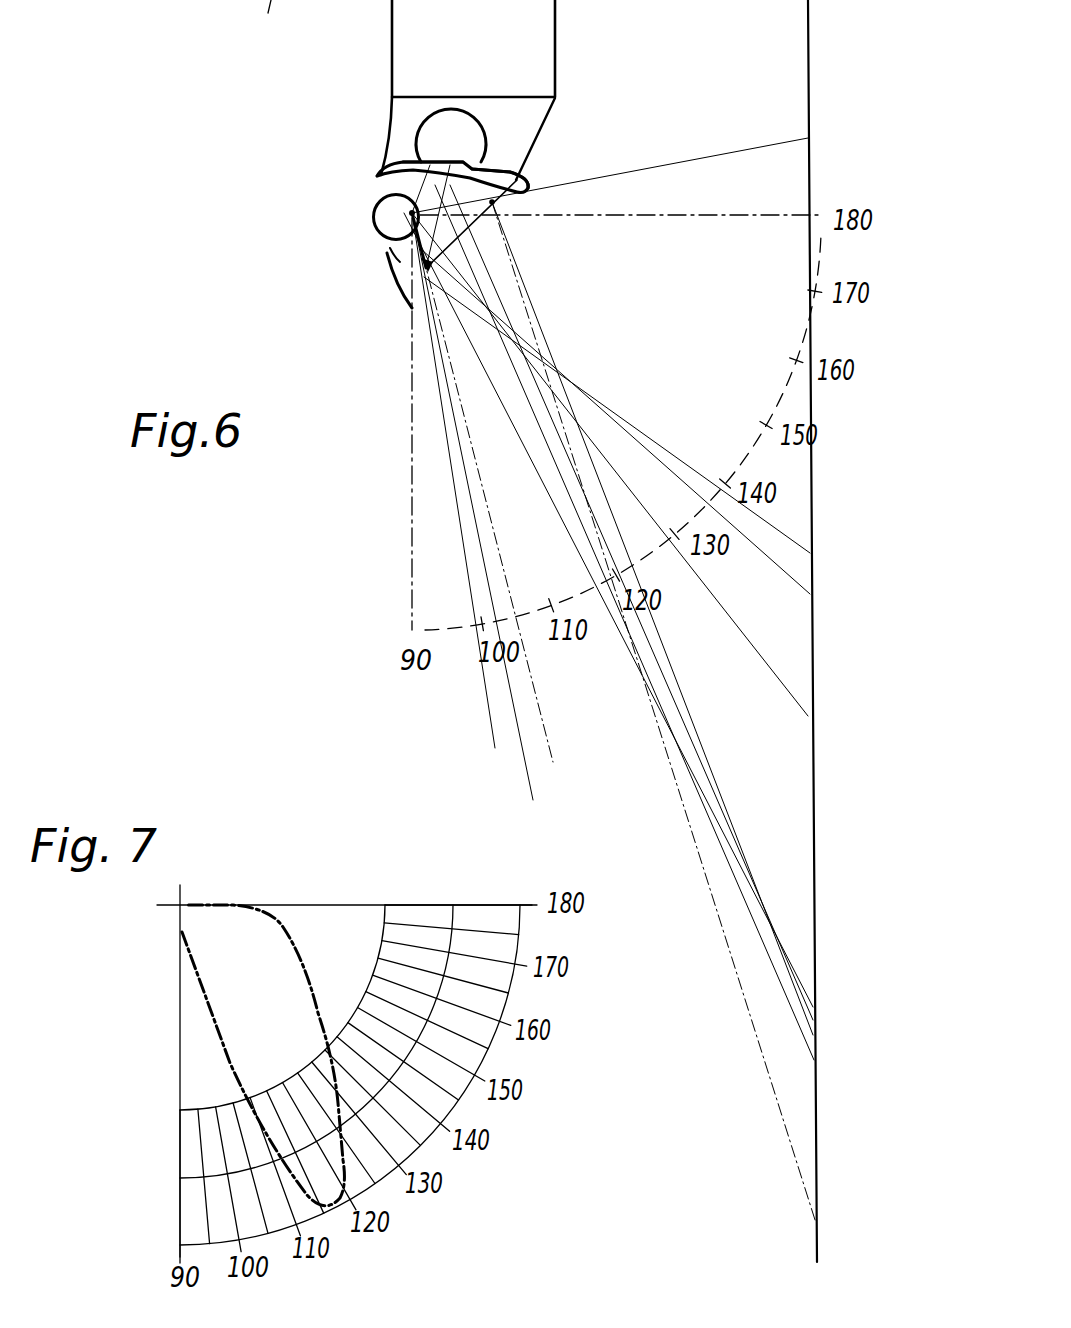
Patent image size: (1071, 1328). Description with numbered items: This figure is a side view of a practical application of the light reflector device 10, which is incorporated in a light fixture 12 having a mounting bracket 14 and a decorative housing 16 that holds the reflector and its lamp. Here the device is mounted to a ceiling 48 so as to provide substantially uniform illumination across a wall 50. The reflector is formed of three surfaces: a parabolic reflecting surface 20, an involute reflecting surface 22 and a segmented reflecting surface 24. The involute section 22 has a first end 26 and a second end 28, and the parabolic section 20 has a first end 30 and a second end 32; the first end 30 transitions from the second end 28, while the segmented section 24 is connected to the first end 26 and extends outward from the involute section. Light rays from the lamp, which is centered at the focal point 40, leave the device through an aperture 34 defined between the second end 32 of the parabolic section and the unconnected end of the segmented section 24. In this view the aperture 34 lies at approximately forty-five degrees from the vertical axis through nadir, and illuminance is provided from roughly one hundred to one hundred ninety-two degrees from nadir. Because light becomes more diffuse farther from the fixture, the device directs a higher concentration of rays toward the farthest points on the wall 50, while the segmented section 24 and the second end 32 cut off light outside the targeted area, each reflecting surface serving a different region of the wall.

The light reflector device 10 is at (452, 312).
The light fixture 12 is at (335, 160).
The mounting bracket 14 is at (386, 36).
The decorative housing 16 is at (397, 296).
The parabolic reflecting surface 20 is at (448, 154).
The involute reflecting surface 22 is at (364, 203).
The segmented reflecting surface 24 is at (403, 261).
The first end of the involute section 26 is at (403, 243).
The second end of the involute section 28 is at (403, 165).
The first end of the parabolic section 30 is at (385, 178).
The second end of the parabolic section 32 is at (508, 192).
The aperture 34 is at (478, 220).
The focal point 40 is at (412, 213).
The ceiling 48 is at (268, 22).
The wall 50 is at (808, 166).